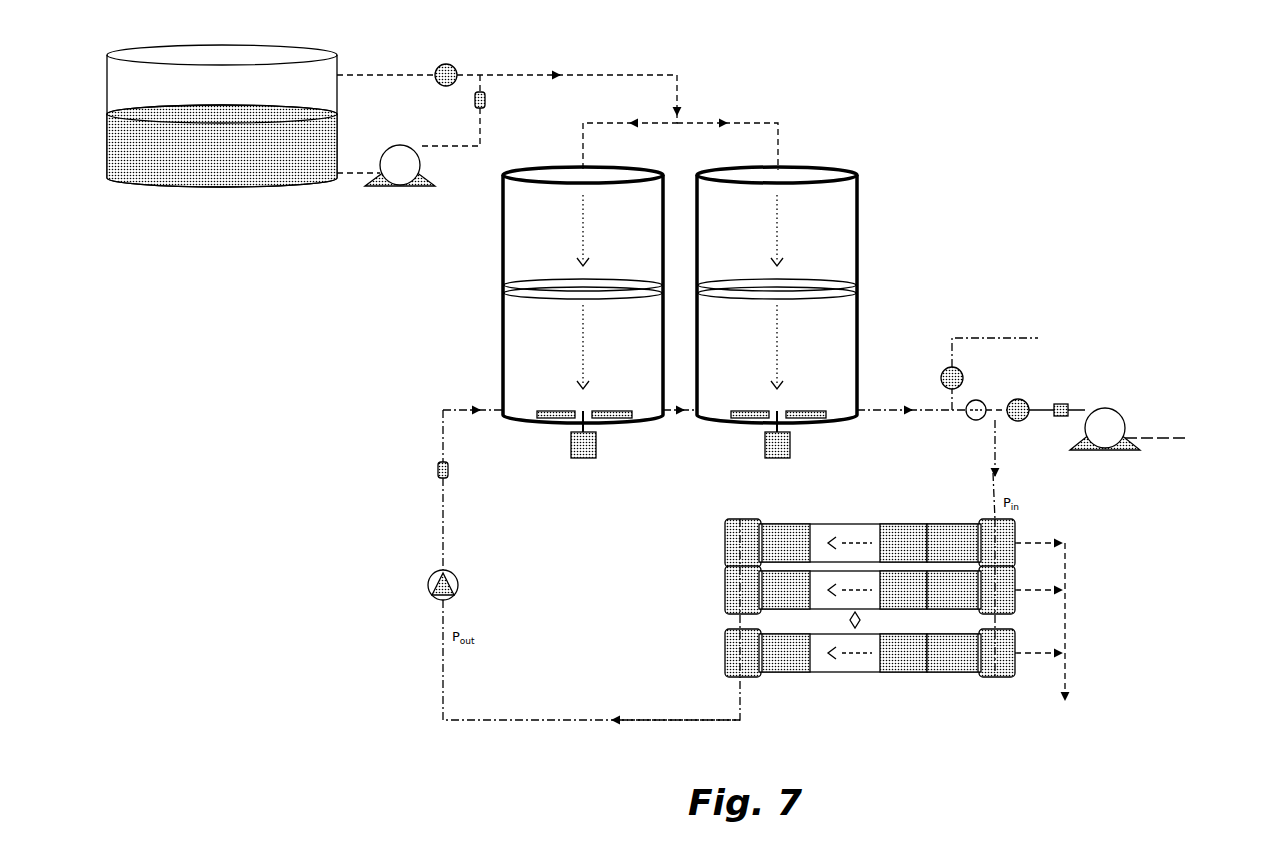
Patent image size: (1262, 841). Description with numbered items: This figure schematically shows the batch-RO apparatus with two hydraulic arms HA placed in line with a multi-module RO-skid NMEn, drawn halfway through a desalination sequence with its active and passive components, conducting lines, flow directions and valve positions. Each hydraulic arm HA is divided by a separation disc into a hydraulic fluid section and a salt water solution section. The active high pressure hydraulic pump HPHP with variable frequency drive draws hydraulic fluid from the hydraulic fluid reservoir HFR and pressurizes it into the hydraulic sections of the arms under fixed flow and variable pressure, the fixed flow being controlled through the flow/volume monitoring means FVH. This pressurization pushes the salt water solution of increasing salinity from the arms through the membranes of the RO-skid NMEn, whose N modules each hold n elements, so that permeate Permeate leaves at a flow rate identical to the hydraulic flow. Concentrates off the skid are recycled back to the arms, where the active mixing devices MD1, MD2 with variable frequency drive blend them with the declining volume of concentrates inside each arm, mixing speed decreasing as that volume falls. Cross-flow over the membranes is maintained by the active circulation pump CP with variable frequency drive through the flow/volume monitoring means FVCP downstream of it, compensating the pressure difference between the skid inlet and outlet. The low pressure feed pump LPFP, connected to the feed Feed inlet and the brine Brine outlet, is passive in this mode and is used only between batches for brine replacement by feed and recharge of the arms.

The hydraulic fluid reservoir HFR is at (222, 116).
The high pressure hydraulic pump HPHP is at (386, 184).
The flow/volume monitoring means FVH is at (452, 110).
The hydraulic arm HA is at (665, 295).
The mixing device MD1 is at (584, 452).
The mixing device MD2 is at (778, 452).
The flow/volume monitoring means FVCP is at (459, 512).
The circulation pump CP is at (418, 589).
The brine Brine is at (1023, 358).
The low pressure feed pump LPFP is at (1105, 450).
The feed Feed is at (1182, 440).
The multi-module RO-skid NMEn is at (846, 623).
The permeate Permeate is at (1087, 632).